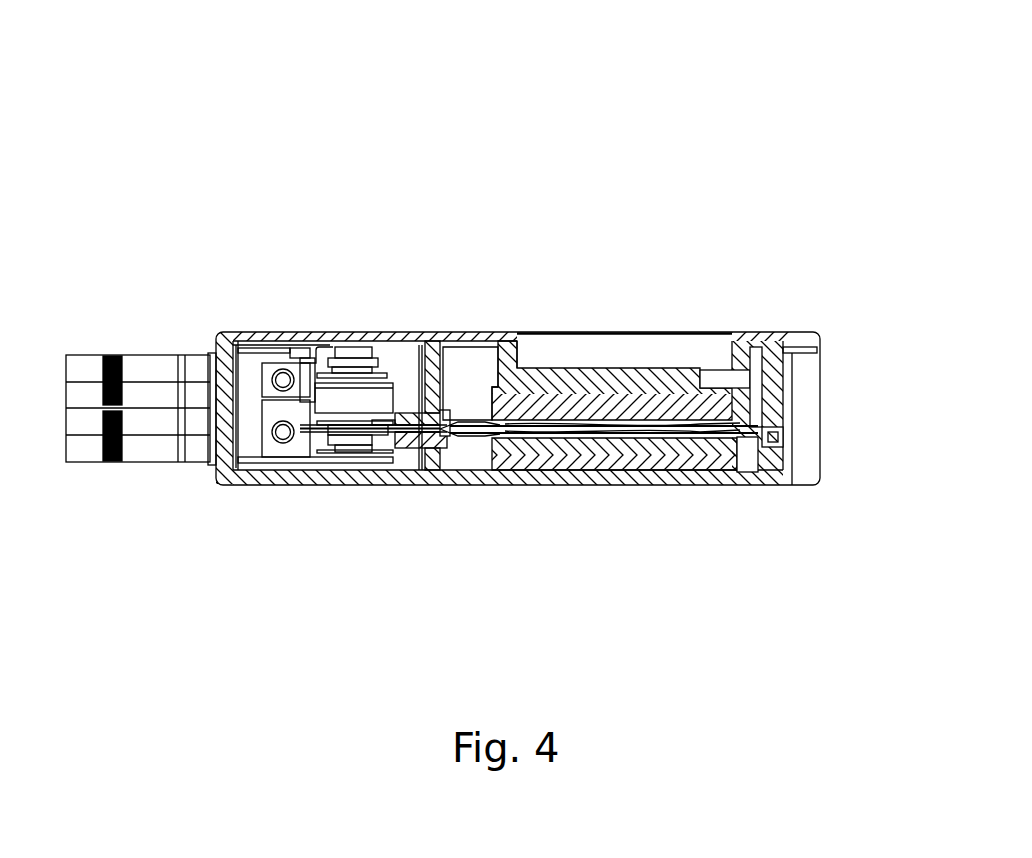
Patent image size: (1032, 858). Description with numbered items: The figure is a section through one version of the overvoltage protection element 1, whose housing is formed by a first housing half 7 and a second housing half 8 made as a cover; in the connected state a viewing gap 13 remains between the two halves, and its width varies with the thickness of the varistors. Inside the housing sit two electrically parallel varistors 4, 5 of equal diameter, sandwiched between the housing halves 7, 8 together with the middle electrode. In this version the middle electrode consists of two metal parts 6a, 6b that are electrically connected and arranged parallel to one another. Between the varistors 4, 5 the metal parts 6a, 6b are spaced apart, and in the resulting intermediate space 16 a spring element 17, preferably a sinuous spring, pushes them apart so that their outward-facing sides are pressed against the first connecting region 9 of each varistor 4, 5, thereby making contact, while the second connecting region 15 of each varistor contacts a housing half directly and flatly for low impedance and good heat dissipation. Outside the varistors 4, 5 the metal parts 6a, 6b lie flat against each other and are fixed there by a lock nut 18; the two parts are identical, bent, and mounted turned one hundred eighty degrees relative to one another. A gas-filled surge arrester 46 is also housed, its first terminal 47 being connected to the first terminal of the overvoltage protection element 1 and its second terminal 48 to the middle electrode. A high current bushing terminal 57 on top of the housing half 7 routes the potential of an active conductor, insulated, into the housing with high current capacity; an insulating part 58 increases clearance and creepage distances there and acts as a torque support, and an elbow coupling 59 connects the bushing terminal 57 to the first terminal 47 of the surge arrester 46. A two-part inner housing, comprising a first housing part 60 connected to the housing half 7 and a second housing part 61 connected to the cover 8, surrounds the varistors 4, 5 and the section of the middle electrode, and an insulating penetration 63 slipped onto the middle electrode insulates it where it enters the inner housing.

The overvoltage protection element 1 is at (718, 226).
The varistor 4 is at (738, 462).
The varistor 5 is at (540, 402).
The metal part 6a is at (470, 437).
The metal part 6b is at (484, 434).
The first housing half 7 is at (325, 456).
The second housing half 8 is at (474, 340).
The first connecting region 9 is at (692, 420).
The viewing gap 13 is at (827, 348).
The second connecting region 15 is at (603, 382).
The intermediate space 16 is at (752, 424).
The spring element 17 is at (640, 458).
The lock nut 18 is at (283, 471).
The gas-filled surge arrester 46 is at (365, 398).
The first terminal of the surge arrester 47 is at (345, 378).
The second terminal of the surge arrester 48 is at (353, 441).
The high current bushing terminal 57 is at (116, 336).
The insulating part 58 is at (250, 432).
The elbow coupling 59 is at (303, 337).
The first housing part 60 is at (436, 472).
The second housing part 61 is at (433, 362).
The insulating penetration 63 is at (418, 452).